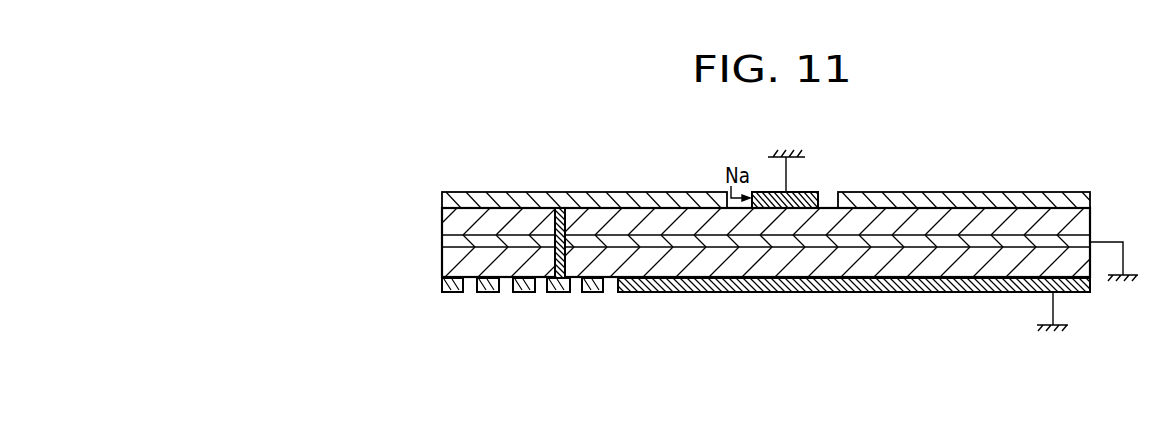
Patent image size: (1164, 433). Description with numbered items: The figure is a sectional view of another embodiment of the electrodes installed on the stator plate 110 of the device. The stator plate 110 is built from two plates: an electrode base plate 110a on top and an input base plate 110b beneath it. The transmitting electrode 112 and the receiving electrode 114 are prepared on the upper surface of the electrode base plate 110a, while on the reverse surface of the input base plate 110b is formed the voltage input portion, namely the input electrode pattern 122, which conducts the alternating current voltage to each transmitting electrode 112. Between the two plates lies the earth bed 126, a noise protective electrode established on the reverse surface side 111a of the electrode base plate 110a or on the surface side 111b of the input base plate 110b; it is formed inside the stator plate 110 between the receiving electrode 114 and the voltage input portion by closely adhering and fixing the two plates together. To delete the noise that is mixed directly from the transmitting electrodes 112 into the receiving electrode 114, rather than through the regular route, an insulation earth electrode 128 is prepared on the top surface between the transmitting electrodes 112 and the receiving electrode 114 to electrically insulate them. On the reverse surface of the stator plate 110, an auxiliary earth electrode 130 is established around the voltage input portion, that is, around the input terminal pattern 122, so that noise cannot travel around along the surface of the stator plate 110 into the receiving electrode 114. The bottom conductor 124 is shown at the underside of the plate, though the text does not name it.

The stator plate 110 is at (766, 246).
The electrode base plate 110a is at (1082, 219).
The input base plate 110b is at (1091, 268).
The reverse surface side of the electrode base plate 111a is at (1013, 247).
The surface side of the input base plate 111b is at (933, 250).
The transmitting electrode 112 is at (602, 192).
The receiving electrode 114 is at (960, 192).
The input electrode pattern 122 is at (608, 300).
The through-hole connection 124 is at (566, 268).
The earth bed 126 is at (884, 240).
The insulation earth electrode 128 is at (813, 192).
The auxiliary earth electrode 130 is at (447, 293).